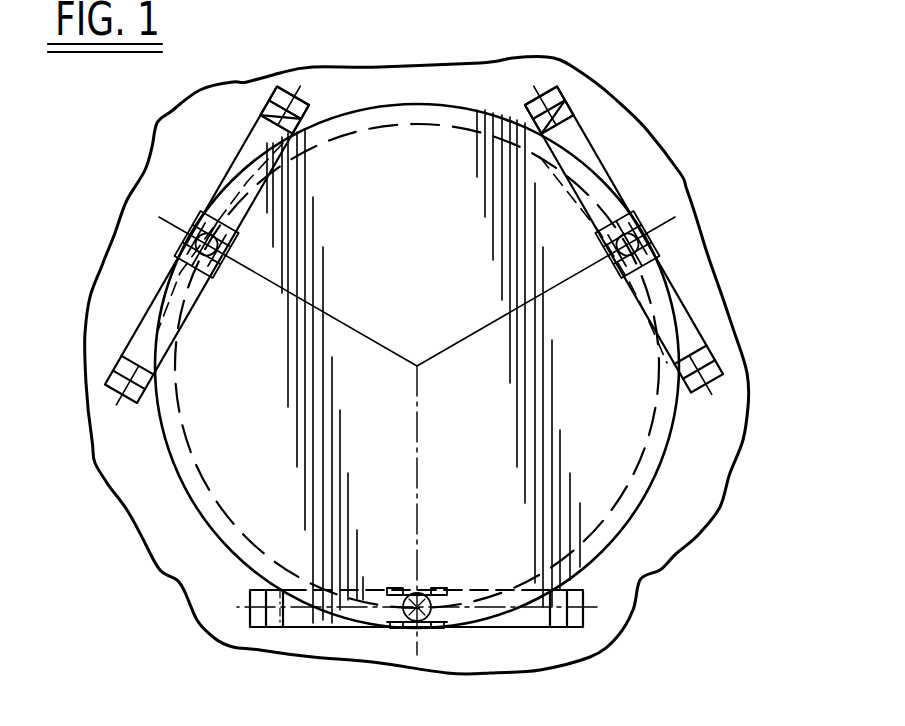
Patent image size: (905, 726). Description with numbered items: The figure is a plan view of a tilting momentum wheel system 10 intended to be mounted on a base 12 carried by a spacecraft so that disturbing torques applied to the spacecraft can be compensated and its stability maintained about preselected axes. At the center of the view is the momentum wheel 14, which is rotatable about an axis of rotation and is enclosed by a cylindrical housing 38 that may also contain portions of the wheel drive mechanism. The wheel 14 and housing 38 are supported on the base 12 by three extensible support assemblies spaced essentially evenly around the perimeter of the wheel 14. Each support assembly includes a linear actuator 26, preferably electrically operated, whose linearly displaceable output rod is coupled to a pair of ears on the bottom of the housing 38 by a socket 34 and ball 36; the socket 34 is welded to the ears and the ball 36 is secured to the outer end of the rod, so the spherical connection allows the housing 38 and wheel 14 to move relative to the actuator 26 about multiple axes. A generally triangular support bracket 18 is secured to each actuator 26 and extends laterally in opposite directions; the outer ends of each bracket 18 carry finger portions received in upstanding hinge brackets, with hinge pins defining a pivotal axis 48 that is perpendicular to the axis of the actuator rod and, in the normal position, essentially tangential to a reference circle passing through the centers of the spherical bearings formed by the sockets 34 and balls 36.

The tilting momentum wheel system 10 is at (112, 588).
The base 12 is at (212, 625).
The momentum wheel 14 is at (600, 530).
The support bracket 18 is at (108, 372).
The linear actuator 26 is at (200, 232).
The socket 34 is at (185, 272).
The ball 36 is at (192, 248).
The cylindrical housing 38 is at (655, 477).
The pivotal axis 48 is at (301, 84).